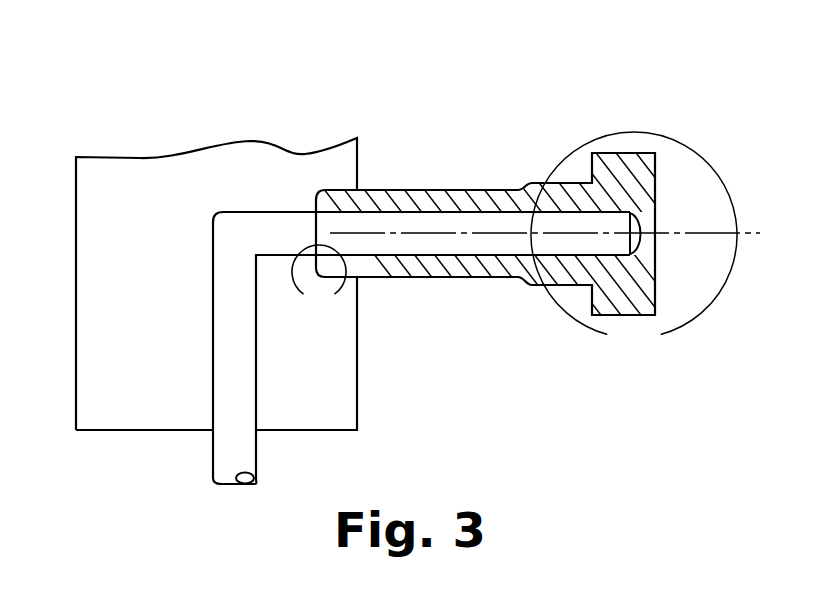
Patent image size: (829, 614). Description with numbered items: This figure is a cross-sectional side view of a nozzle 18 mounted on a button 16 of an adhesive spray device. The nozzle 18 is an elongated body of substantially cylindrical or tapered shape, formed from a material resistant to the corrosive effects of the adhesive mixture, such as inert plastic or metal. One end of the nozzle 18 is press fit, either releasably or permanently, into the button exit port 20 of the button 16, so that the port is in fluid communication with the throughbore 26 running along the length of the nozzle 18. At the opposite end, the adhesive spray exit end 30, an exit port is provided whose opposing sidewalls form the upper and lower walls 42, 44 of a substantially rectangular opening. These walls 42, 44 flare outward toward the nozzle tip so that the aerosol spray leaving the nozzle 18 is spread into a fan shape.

The button 16 is at (155, 205).
The nozzle 18 is at (384, 82).
The button exit port 20 is at (360, 297).
The throughbore 26 is at (493, 223).
The adhesive spray exit end 30 is at (688, 304).
The upper wall 42 is at (653, 217).
The lower wall 44 is at (653, 250).